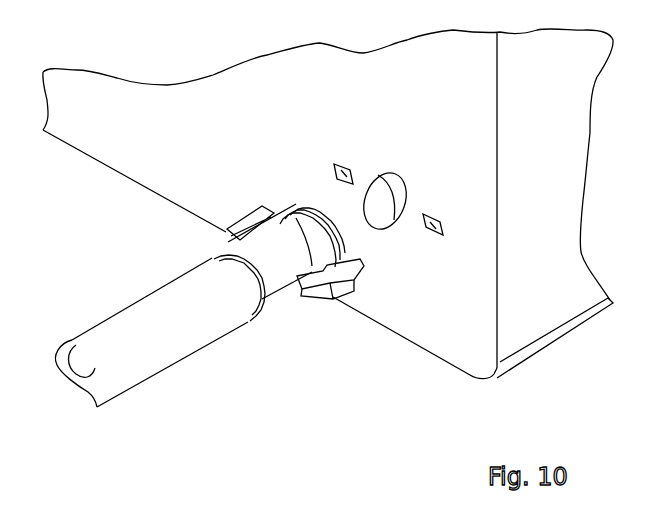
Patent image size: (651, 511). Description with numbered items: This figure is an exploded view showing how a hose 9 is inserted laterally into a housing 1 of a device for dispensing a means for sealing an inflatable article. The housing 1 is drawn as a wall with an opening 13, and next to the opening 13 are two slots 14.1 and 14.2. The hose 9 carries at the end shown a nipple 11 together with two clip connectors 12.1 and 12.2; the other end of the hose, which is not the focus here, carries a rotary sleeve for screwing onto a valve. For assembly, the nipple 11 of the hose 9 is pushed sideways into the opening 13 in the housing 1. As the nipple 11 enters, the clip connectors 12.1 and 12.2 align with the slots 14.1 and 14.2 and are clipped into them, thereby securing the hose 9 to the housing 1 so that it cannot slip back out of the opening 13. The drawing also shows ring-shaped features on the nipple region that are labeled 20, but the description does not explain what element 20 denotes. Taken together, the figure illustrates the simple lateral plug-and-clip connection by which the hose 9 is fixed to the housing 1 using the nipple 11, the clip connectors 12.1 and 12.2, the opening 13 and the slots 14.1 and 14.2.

The housing 1 is at (328, 204).
The hose 9 is at (163, 366).
The nipple 11 is at (302, 297).
The clip connector 12.1 is at (226, 230).
The clip connector 12.2 is at (348, 294).
The opening 13 is at (392, 190).
The slot 14.1 is at (339, 163).
The slot 14.2 is at (432, 213).
The sealing rings 20 is at (344, 243).